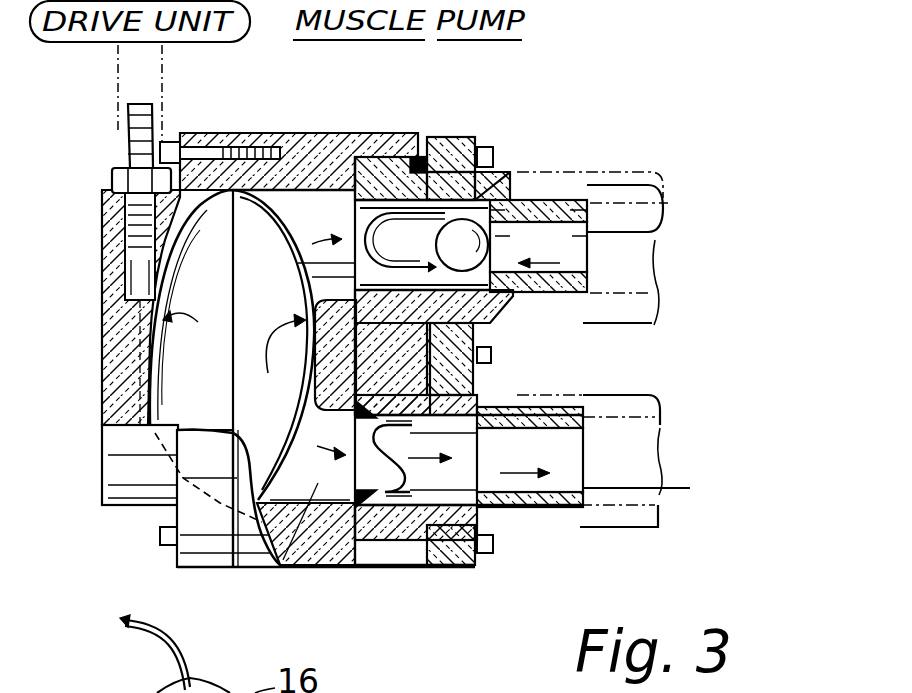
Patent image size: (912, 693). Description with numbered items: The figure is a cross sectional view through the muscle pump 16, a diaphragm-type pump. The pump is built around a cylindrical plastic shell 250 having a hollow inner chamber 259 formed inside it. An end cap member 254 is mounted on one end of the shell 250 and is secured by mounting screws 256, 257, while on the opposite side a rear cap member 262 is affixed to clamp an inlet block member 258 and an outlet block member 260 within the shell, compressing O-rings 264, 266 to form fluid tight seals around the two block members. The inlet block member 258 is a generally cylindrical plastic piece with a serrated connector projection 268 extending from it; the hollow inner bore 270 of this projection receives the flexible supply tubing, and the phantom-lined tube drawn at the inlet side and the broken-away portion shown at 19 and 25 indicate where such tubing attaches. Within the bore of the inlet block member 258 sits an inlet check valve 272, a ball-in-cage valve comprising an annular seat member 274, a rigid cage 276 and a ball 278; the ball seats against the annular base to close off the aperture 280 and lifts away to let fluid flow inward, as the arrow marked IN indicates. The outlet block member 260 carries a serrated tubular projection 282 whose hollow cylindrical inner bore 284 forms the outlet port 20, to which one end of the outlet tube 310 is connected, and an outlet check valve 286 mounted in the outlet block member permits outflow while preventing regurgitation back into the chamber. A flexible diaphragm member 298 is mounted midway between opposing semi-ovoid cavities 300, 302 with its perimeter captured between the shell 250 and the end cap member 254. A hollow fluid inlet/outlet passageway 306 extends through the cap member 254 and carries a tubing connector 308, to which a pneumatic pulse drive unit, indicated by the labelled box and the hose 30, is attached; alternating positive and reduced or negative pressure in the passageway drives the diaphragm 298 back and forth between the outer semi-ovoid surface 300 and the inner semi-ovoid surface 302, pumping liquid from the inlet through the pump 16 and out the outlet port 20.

The muscle pump 16 is at (165, 580).
The inlet tube 19 is at (596, 267).
The outlet port 20 is at (587, 459).
The tube break 25 is at (647, 310).
The pressure hose 30 is at (190, 660).
The cylindrical plastic shell 250 is at (351, 157).
The end cap member 254 is at (117, 333).
The mounting screw 256 is at (173, 142).
The mounting screw 257 is at (160, 542).
The inlet block member 258 is at (510, 193).
The hollow inner chamber 259 is at (297, 568).
The outlet block member 260 is at (500, 528).
The rear cap member 262 is at (470, 136).
The O-ring 264 is at (418, 156).
The O-ring 266 is at (440, 567).
The serrated connector projection 268 is at (600, 186).
The inner bore 270 is at (640, 215).
The inlet check valve 272 is at (512, 298).
The annular seat member 274 is at (557, 172).
The rigid cage 276 is at (372, 220).
The ball 278 is at (378, 222).
The aperture 280 is at (507, 410).
The serrated tubular projection 282 is at (588, 402).
The hollow cylindrical inner bore 284 is at (583, 488).
The outlet check valve 286 is at (373, 500).
The flexible diaphragm member 298 is at (153, 297).
The outer semi-ovoid cavity 300 is at (195, 337).
The inner semi-ovoid cavity 302 is at (294, 387).
The fluid inlet/outlet passageway 306 is at (103, 227).
The tubing connector 308 is at (127, 110).
The outlet tube 310 is at (140, 275).